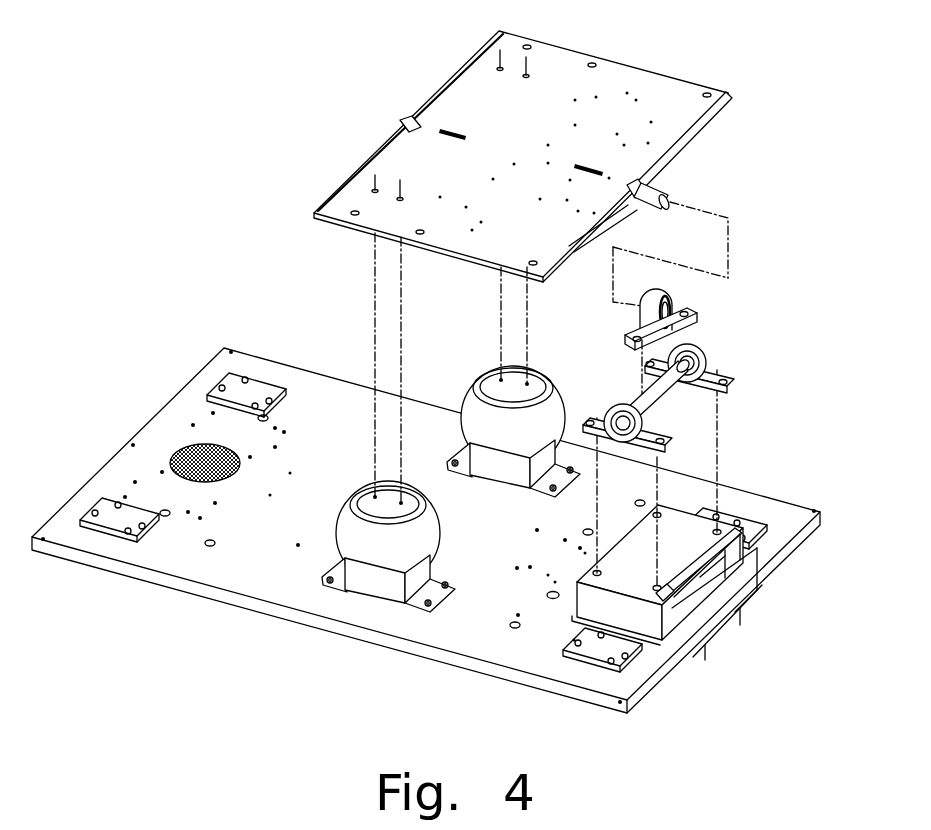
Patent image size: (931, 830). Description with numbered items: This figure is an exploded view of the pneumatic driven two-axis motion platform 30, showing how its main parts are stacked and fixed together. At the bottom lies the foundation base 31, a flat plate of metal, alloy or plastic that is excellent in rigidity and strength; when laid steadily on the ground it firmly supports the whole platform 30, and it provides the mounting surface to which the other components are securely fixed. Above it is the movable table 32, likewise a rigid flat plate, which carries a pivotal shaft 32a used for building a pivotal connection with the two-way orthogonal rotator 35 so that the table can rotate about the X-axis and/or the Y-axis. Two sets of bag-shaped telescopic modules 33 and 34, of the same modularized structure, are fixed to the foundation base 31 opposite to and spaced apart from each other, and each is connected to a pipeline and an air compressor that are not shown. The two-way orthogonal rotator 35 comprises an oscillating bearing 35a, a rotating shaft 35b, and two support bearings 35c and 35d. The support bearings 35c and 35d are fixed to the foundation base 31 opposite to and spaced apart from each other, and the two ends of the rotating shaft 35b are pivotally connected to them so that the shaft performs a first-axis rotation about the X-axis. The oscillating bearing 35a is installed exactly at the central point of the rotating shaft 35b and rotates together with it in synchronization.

The two-axis motion platform 30 is at (455, 365).
The foundation base 31 is at (175, 425).
The movable table 32 is at (531, 149).
The pivotal shaft 32a is at (667, 190).
The bag-shaped telescopic module 33 is at (350, 548).
The bag-shaped telescopic module 34 is at (477, 422).
The two-way orthogonal rotator 35 is at (702, 376).
The oscillating bearing 35a is at (675, 308).
The rotating shaft 35b is at (653, 397).
The support bearing 35c is at (681, 429).
The support bearing 35d is at (705, 358).